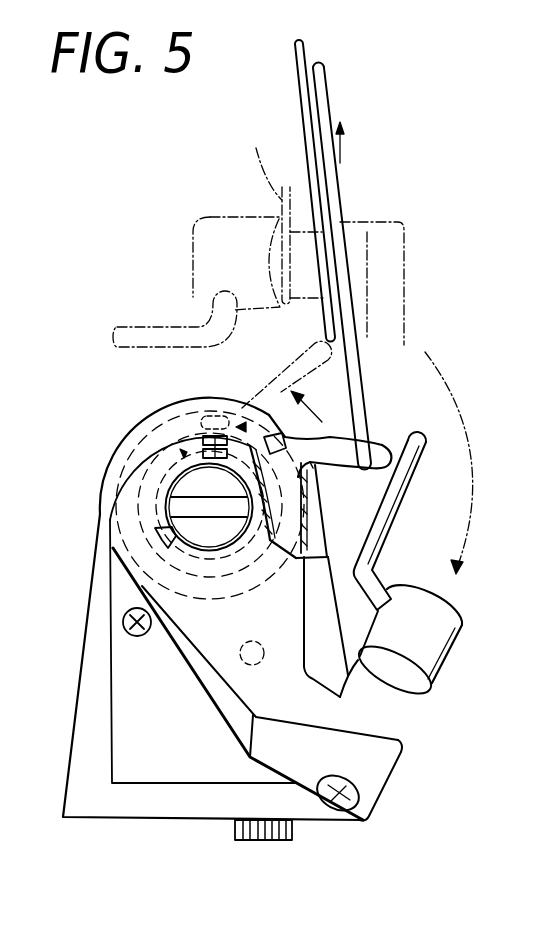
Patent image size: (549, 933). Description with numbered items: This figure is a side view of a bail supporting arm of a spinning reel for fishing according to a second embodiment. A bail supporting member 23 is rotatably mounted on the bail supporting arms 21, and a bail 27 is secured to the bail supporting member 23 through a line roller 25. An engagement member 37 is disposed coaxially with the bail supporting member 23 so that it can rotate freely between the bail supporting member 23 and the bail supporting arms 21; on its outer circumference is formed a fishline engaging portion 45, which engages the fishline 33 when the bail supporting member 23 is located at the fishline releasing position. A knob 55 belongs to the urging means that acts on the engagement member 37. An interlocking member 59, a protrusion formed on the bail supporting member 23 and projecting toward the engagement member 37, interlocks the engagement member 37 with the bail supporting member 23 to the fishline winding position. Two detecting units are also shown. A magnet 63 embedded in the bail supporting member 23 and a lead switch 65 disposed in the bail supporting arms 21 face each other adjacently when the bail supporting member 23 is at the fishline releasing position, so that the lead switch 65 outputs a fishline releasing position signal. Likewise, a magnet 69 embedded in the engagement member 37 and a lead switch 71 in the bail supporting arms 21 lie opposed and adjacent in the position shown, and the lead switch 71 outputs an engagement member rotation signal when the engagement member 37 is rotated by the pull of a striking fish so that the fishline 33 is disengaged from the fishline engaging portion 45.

The bail supporting arm 21 is at (100, 630).
The bail supporting member 23 is at (372, 762).
The line roller 25 is at (393, 702).
The bail 27 is at (155, 334).
The fishline 33 is at (302, 138).
The engagement member 37 is at (106, 470).
The fishline engaging portion 45 is at (283, 388).
The knob 55 is at (262, 843).
The interlocking member 59 is at (240, 653).
The magnet 63 is at (166, 408).
The lead switch 65 is at (134, 424).
The magnet 69 is at (312, 457).
The lead switch 71 is at (216, 418).